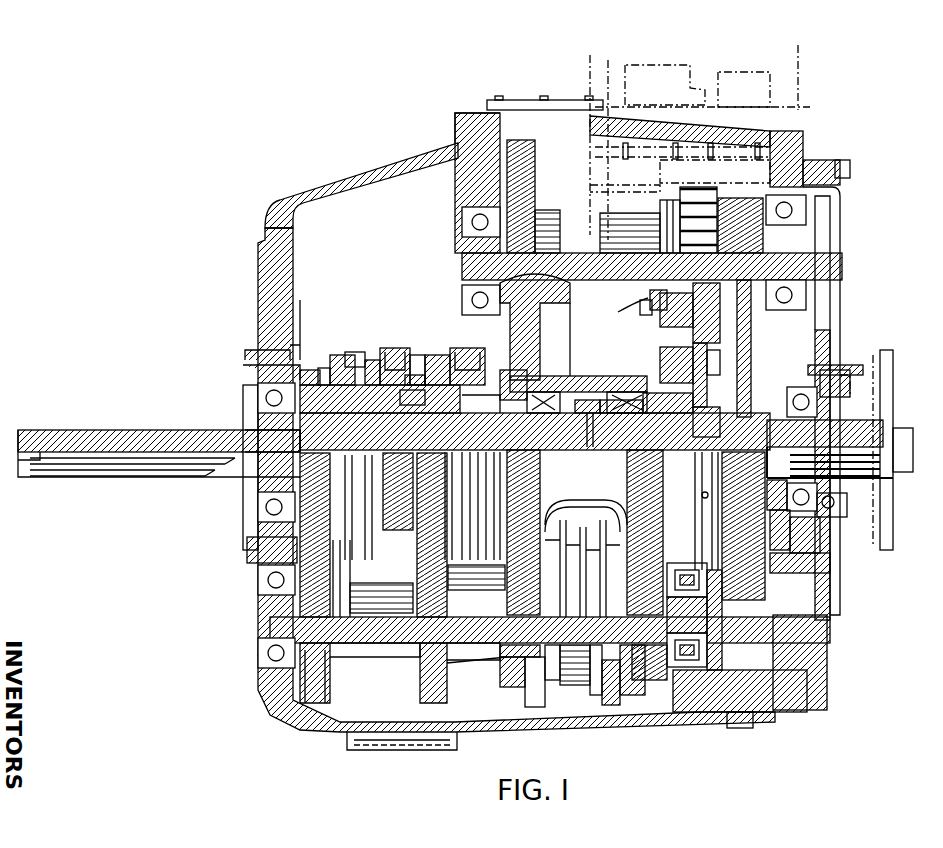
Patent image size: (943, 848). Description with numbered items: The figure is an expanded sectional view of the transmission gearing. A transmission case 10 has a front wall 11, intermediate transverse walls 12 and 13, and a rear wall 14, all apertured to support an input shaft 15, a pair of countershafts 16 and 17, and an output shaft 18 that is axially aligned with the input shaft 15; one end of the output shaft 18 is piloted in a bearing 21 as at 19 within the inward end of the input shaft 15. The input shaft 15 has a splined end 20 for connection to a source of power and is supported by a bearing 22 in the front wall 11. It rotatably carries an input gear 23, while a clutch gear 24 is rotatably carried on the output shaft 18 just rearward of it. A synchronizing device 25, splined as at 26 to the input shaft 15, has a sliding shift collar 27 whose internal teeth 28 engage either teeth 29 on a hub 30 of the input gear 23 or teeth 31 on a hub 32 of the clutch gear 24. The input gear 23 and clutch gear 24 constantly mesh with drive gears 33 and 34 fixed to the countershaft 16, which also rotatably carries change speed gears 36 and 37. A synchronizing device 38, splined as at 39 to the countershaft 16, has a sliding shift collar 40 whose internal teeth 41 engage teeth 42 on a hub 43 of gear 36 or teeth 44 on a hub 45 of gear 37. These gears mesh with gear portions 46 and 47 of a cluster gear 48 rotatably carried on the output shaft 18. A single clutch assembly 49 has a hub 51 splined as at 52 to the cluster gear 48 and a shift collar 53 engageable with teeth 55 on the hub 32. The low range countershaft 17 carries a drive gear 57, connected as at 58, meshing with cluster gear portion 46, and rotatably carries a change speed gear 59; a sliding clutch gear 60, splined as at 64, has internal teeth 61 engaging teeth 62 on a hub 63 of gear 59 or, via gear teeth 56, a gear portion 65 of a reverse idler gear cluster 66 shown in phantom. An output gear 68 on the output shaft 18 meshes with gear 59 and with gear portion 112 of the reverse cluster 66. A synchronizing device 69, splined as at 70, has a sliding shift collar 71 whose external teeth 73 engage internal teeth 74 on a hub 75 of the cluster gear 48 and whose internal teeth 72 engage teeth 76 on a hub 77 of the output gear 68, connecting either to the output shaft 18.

The transmission case 10 is at (357, 178).
The front wall 11 is at (262, 283).
The intermediate transverse wall 12 is at (460, 185).
The intermediate transverse wall 13 is at (680, 700).
The rear wall 14 is at (795, 157).
The input shaft 15 is at (190, 430).
The countershaft 16 is at (262, 628).
The countershaft 17 is at (462, 265).
The output shaft 18 is at (870, 430).
The pilot location 19 is at (265, 435).
The splined end 20 is at (102, 470).
The bearing 21 is at (312, 385).
The bearing 22 is at (262, 510).
The input gear 23 is at (322, 365).
The clutch gear 24 is at (412, 378).
The synchronizing device 25 is at (378, 553).
The spline 26 is at (358, 360).
The sliding shift collar 27 is at (395, 350).
The internal teeth 28 is at (372, 380).
The teeth 29 is at (338, 372).
The hub 30 is at (320, 378).
The teeth 31 is at (425, 365).
The hub 32 is at (410, 392).
The drive gear 33 is at (325, 705).
The drive gear 34 is at (430, 708).
The change speed gear 36 is at (530, 690).
The change speed gear 37 is at (640, 690).
The synchronizing device 38 is at (575, 517).
The spline 39 is at (594, 690).
The sliding shift collar 40 is at (572, 665).
The internal teeth 41 is at (548, 660).
The teeth 42 is at (512, 675).
The hub 43 is at (505, 655).
The teeth 44 is at (615, 700).
The hub 45 is at (638, 675).
The cluster gear portion 46 is at (537, 490).
The cluster gear portion 47 is at (628, 490).
The cluster gear 48 is at (583, 378).
The synchronizing device 49 is at (480, 560).
The hub 51 is at (520, 393).
The spline 52 is at (515, 380).
The shift collar 53 is at (478, 365).
The teeth 55 is at (440, 362).
The gear teeth 56 is at (680, 298).
The drive gear 57 is at (528, 180).
The driving connection 58 is at (538, 292).
The change speed gear 59 is at (735, 205).
The sliding clutch gear 60 is at (690, 200).
The internal teeth 61 is at (676, 310).
The teeth 62 is at (700, 320).
The hub 63 is at (665, 300).
The spline 64 is at (619, 314).
The gear portion 65 is at (612, 190).
The reverse idler gear cluster 66 is at (665, 92).
The output gear 68 is at (745, 600).
The synchronizing device 69 is at (700, 556).
The spline 70 is at (690, 400).
The sliding shift collar 71 is at (704, 370).
The internal teeth 72 is at (690, 387).
The external teeth 73 is at (655, 398).
The internal teeth 74 is at (607, 405).
The hub 75 is at (630, 393).
The teeth 76 is at (705, 370).
The hub 77 is at (845, 395).
The gear portion 112 is at (737, 90).